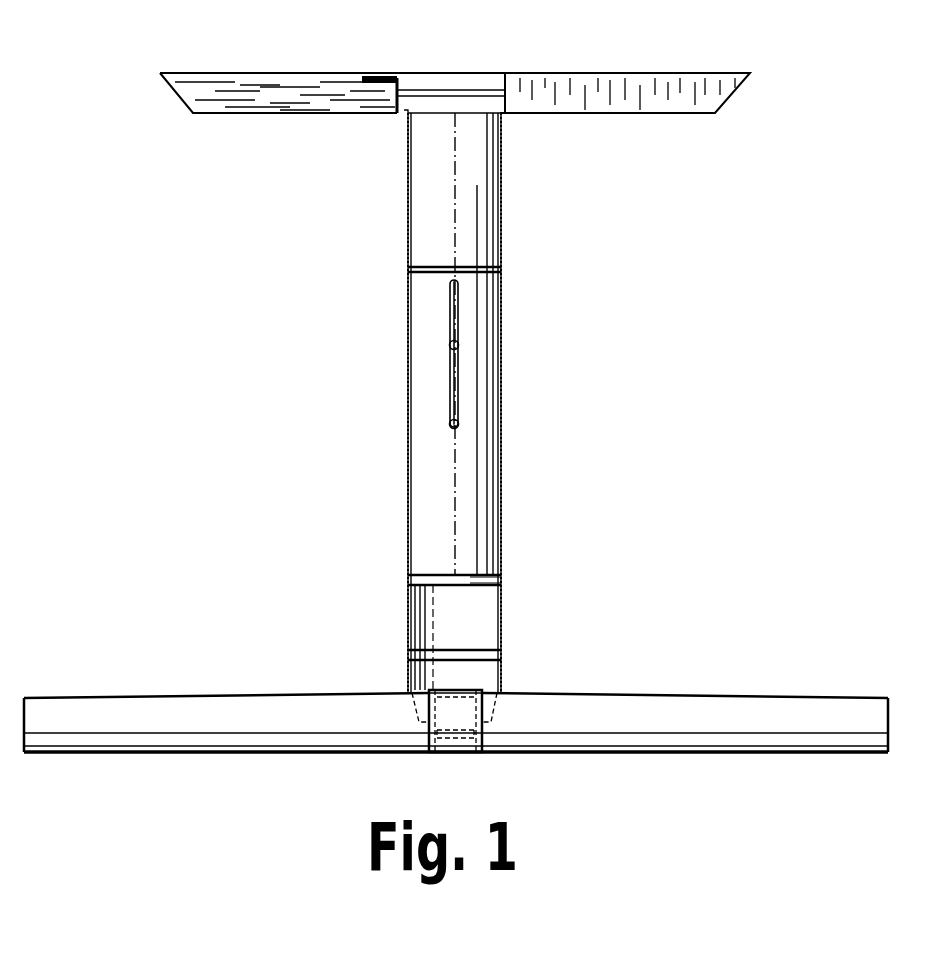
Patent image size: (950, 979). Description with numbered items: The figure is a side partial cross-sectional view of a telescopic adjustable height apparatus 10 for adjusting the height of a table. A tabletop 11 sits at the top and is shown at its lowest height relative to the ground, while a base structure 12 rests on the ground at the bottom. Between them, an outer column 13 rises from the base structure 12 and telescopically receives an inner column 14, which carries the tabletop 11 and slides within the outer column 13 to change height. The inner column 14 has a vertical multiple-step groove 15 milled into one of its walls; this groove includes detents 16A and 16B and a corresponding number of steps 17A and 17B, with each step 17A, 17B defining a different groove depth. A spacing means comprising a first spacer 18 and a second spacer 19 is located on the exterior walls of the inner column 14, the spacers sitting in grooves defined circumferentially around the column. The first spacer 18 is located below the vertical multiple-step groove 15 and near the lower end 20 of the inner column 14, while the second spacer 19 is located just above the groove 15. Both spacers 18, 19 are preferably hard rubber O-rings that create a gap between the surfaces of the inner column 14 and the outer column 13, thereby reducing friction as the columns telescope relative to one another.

The telescopic adjustable height apparatus 10 is at (290, 434).
The tabletop 11 is at (265, 87).
The base structure 12 is at (249, 740).
The outer column 13 is at (408, 392).
The inner column 14 is at (497, 375).
The vertical multiple-step groove 15 is at (449, 351).
The detent 16A is at (459, 343).
The detent 16B is at (459, 423).
The step 17A is at (455, 305).
The step 17B is at (452, 381).
The first spacer 18 is at (498, 578).
The second spacer 19 is at (410, 267).
The lower end of the inner column 20 is at (480, 590).